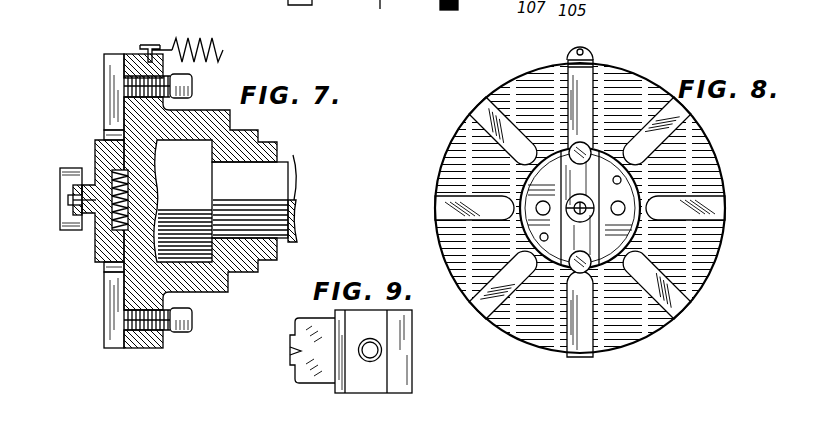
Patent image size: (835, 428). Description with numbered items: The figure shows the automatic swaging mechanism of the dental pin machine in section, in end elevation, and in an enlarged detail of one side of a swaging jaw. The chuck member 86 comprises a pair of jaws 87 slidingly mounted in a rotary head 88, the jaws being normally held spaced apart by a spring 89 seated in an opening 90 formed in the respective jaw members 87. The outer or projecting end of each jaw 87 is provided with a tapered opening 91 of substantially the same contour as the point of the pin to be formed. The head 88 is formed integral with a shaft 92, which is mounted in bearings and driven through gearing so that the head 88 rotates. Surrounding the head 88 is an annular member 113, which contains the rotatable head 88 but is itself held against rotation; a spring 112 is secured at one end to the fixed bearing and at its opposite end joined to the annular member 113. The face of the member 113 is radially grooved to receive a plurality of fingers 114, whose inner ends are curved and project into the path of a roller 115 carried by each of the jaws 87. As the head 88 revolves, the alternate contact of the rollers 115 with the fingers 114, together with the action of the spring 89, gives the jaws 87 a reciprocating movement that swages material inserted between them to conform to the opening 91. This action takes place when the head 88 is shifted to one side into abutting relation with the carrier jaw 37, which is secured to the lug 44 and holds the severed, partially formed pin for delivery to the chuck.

In FIG. 7, the clamping jaw member 37 is at (72, 208).
In FIG. 7, the lug 44 is at (67, 184).
In FIG. 7, the chuck member 86 is at (93, 183).
In FIG. 8, the chuck member 86 is at (720, 243).
In FIG. 7, the jaws 87 is at (92, 187).
In FIG. 9, the jaws 87 is at (408, 381).
In FIG. 8, the jaws 87 is at (574, 178).
In FIG. 7, the rotary head 88 is at (181, 177).
In FIG. 8, the rotary head 88 is at (636, 230).
In FIG. 7, the spring 89 is at (130, 193).
In FIG. 9, the spring 89 is at (378, 349).
In FIG. 8, the spring 89 is at (580, 208).
In FIG. 7, the opening 90 is at (133, 213).
In FIG. 9, the opening 90 is at (370, 362).
In FIG. 9, the tapered opening 91 is at (300, 350).
In FIG. 7, the shaft 92 is at (254, 198).
In FIG. 7, the spring 112 is at (205, 33).
In FIG. 8, the spring 112 is at (590, 50).
In FIG. 7, the annular member 113 is at (131, 54).
In FIG. 8, the annular member 113 is at (724, 173).
In FIG. 7, the fingers 114 is at (108, 78).
In FIG. 8, the fingers 114 is at (465, 202).
In FIG. 7, the roller 115 is at (106, 133).
In FIG. 8, the roller 115 is at (587, 143).